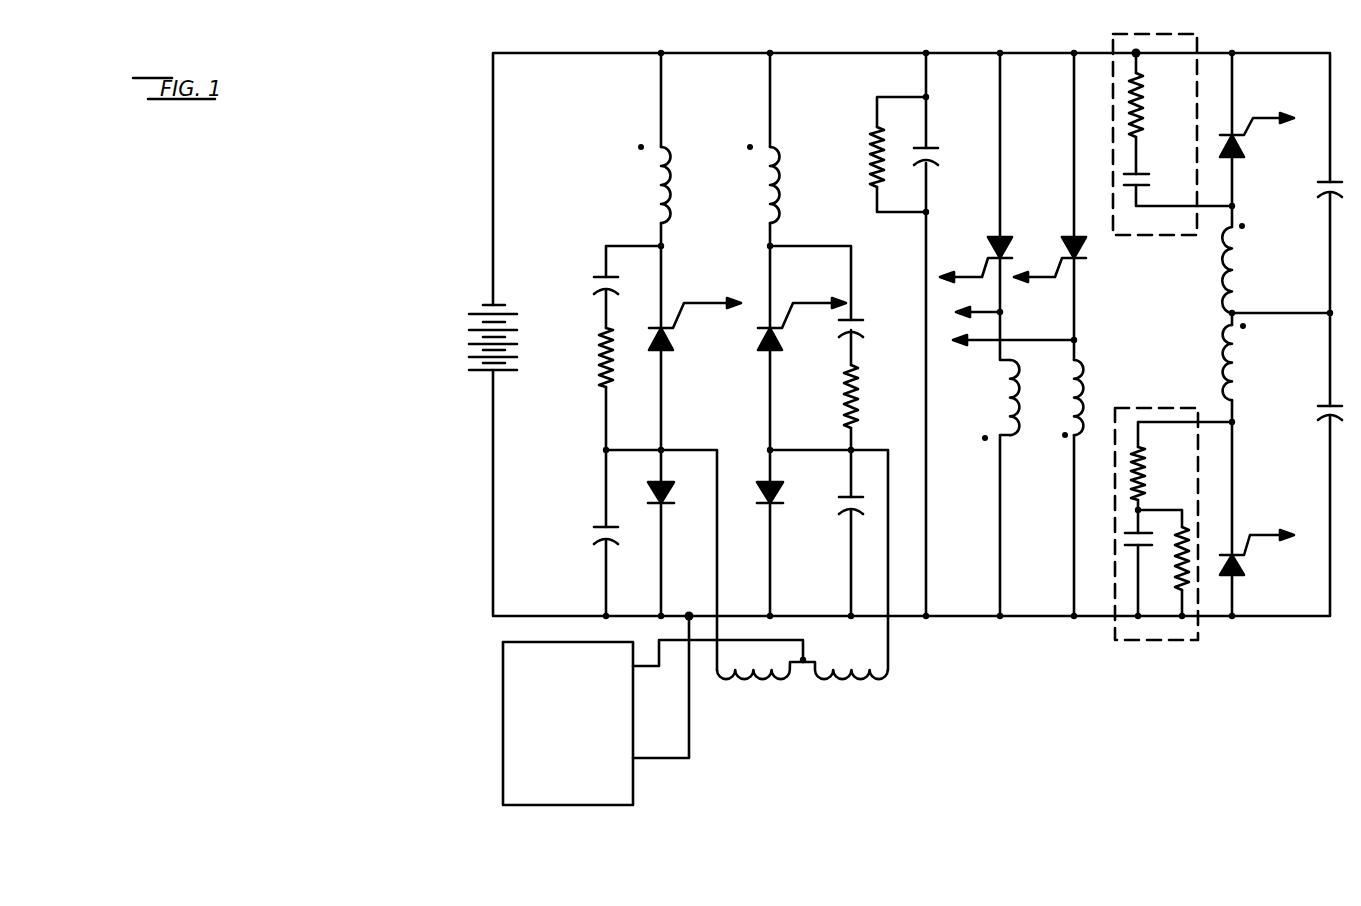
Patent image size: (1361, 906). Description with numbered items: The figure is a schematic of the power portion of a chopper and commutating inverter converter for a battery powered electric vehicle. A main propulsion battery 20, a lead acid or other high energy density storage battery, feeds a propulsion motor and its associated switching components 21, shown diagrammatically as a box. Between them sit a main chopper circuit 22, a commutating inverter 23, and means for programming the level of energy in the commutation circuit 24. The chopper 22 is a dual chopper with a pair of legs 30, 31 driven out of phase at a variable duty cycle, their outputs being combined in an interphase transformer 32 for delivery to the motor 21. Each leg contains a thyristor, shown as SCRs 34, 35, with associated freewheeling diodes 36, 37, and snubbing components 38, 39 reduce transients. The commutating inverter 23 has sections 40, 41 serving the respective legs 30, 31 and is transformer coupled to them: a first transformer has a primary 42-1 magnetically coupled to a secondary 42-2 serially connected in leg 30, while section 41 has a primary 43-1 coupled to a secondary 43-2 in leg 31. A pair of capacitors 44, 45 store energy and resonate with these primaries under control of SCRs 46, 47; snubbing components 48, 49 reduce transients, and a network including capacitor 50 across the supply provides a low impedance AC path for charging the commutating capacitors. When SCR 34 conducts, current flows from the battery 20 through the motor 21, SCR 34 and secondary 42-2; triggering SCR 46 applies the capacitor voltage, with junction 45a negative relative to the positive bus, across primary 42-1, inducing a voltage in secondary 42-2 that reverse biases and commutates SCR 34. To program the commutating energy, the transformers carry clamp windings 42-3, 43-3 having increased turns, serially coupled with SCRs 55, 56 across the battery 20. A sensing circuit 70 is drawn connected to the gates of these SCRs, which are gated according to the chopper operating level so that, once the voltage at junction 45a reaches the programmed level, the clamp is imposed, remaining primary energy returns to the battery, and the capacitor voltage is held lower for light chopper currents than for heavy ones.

The main propulsion battery 20 is at (468, 352).
The propulsion motor and associated switching components 21 is at (503, 696).
The main chopper circuit 22 is at (716, 266).
The commutating inverter 23 is at (1182, 313).
The means for programming the level of energy in the commutation circuit 24 is at (1058, 414).
The chopper leg 30 is at (640, 421).
The chopper leg 31 is at (816, 416).
The interphase transformer 32 is at (838, 685).
The SCR 34 is at (676, 338).
The SCR 35 is at (758, 350).
The freewheeling diode 36 is at (676, 490).
The freewheeling diode 37 is at (785, 490).
The snubbing components 38 is at (594, 333).
The snubbing components 39 is at (866, 337).
The commutating inverter section 40 is at (1292, 508).
The commutating inverter section 41 is at (1286, 224).
The transformer primary 42-1 is at (1226, 366).
The transformer secondary 42-2 is at (680, 158).
The clamp winding 42-3 is at (1090, 368).
The transformer primary 43-1 is at (1228, 260).
The transformer secondary 43-2 is at (789, 163).
The clamp winding 43-3 is at (1008, 440).
The capacitor 44 is at (1316, 414).
The capacitor 45 is at (1320, 186).
The junction 45a is at (1324, 318).
The SCR 46 is at (1244, 572).
The SCR 47 is at (1246, 142).
The snubbing components 48 is at (1114, 594).
The snubbing components 49 is at (1113, 115).
The capacitor 50 is at (930, 146).
The SCR 55 is at (1066, 240).
The SCR 56 is at (992, 240).
The sensing circuit 70 is at (972, 324).